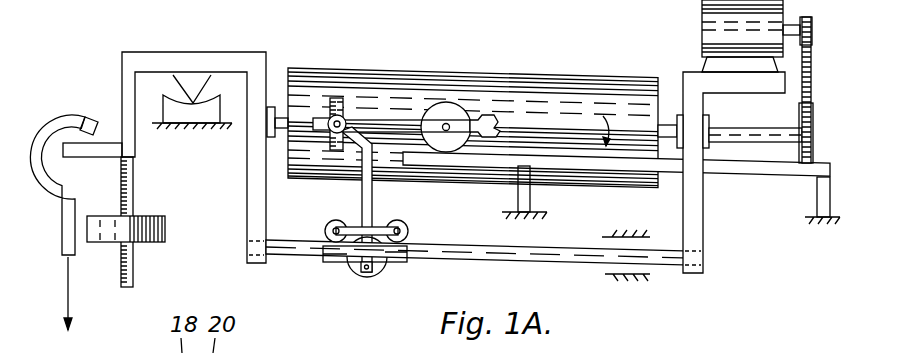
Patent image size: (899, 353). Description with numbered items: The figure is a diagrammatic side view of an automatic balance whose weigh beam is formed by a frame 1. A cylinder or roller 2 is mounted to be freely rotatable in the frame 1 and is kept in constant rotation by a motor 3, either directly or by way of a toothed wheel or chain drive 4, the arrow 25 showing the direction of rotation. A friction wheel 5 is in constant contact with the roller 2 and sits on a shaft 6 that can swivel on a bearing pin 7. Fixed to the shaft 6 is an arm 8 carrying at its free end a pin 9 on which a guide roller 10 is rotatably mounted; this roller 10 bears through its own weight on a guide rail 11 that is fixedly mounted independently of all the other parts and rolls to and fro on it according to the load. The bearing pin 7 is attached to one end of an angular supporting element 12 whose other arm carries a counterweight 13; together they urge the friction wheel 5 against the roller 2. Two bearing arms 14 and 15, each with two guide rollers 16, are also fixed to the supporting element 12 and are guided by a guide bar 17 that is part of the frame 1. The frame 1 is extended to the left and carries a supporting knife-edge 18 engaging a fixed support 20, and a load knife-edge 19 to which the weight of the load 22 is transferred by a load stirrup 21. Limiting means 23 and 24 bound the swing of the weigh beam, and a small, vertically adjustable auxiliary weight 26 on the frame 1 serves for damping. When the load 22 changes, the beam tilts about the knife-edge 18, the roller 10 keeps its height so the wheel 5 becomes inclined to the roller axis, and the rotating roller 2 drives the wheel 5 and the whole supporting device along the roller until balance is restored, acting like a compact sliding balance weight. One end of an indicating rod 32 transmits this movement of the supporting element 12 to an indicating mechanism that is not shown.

The frame 1 is at (258, 207).
The roller 2 is at (564, 96).
The motor 3 is at (709, 23).
The toothed wheel or chain drive 4 is at (806, 67).
The friction wheel 5 is at (336, 98).
The shaft 6 is at (317, 118).
The bearing pin 7 is at (341, 118).
The arm 8 is at (436, 122).
The pin 9 is at (448, 124).
The guide roller 10 is at (460, 116).
The guide rail 11 is at (585, 176).
The angular supporting element 12 is at (372, 193).
The counterweight 13 is at (367, 280).
The bearing arm 14 is at (357, 227).
The bearing arm 15 is at (338, 257).
The guide rollers 16 is at (409, 234).
The guide bar 17 is at (479, 254).
The supporting knife-edge 18 is at (190, 72).
The load knife-edge 19 is at (81, 132).
The fixed support 20 is at (175, 110).
The load stirrup 21 is at (48, 184).
The load 22 is at (70, 288).
The limiting means 23 is at (626, 232).
The limiting means 24 is at (619, 280).
The direction of rotation arrow 25 is at (603, 122).
The auxiliary weight 26 is at (165, 229).
The indicating rod end 32 is at (488, 123).